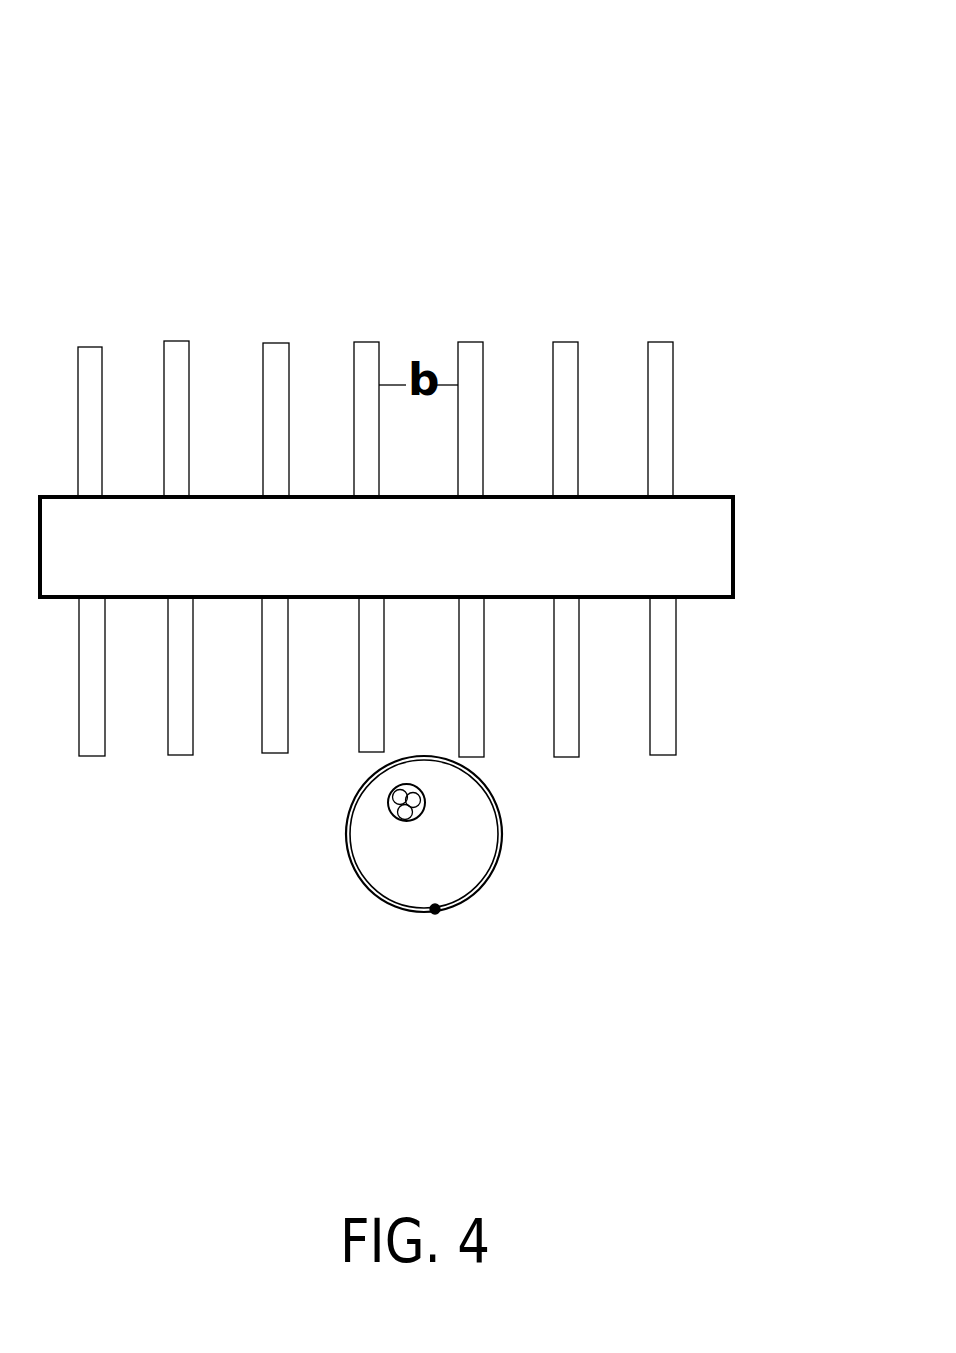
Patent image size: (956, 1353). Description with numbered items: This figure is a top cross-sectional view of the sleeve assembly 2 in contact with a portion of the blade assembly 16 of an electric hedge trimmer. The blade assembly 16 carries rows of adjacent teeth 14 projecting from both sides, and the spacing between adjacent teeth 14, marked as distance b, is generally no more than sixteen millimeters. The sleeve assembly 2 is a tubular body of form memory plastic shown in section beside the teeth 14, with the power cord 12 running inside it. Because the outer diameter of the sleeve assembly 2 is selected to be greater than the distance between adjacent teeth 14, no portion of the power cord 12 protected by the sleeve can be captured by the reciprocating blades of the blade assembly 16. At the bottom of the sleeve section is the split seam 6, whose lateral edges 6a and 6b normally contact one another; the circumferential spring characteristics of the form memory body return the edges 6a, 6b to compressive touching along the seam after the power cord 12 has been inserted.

The sleeve assembly 2 is at (502, 838).
The split seam 6 is at (436, 912).
The lateral edge 6a is at (436, 912).
The lateral edge 6b is at (436, 912).
The power cord 12 is at (423, 815).
The teeth 14 is at (107, 333).
The blade assembly 16 is at (687, 529).